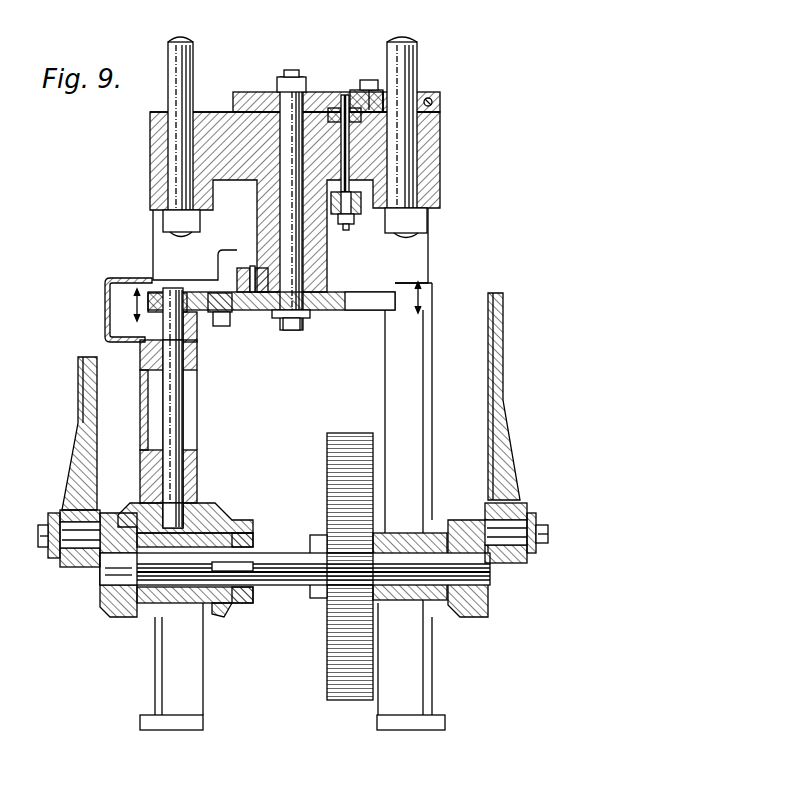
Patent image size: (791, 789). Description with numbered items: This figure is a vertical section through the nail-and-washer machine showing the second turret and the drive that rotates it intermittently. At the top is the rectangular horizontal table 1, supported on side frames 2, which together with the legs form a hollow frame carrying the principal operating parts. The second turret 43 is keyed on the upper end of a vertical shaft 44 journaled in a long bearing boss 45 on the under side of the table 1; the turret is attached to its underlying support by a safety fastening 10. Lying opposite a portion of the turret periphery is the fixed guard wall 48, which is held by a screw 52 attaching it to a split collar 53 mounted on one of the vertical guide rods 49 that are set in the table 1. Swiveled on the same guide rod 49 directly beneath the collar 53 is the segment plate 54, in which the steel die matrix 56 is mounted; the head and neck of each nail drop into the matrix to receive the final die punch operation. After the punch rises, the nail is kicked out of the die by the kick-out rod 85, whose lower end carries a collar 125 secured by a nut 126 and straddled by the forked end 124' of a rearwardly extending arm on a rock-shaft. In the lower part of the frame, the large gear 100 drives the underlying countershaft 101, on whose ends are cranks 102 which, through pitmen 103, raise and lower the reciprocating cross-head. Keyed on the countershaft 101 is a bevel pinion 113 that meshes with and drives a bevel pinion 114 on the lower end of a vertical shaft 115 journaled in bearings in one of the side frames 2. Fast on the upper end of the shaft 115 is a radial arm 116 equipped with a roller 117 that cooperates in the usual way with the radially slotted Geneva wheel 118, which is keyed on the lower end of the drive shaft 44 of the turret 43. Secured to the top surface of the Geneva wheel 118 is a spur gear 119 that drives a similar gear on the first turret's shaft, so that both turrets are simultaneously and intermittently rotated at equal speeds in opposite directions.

The table 1 is at (152, 152).
The side frames 2 is at (142, 398).
The safety fastening 10 is at (431, 297).
The second turret 43 is at (252, 92).
The vertical shaft 44 is at (287, 184).
The bearing boss 45 is at (268, 217).
The guard wall 48 is at (355, 90).
The guide rods 49 is at (170, 98).
The screw 52 is at (369, 80).
The split collar 53 is at (432, 92).
The segment plate 54 is at (386, 118).
The die matrix 56 is at (334, 110).
The kick-out rod 85 is at (345, 176).
The large gear 100 is at (331, 670).
The countershaft 101 is at (278, 558).
The cranks 102 is at (77, 560).
The pitmen 103 is at (80, 408).
The bevel pinion 113 is at (237, 522).
The bevel pinion 114 is at (214, 503).
The vertical shaft 115 is at (176, 408).
The radial arm 116 is at (232, 325).
The roller 117 is at (212, 293).
The Geneva wheel 118 is at (330, 310).
The spur gear 119 is at (247, 268).
The forked end 124' is at (407, 189).
The collar 125 is at (352, 211).
The nut 126 is at (349, 229).